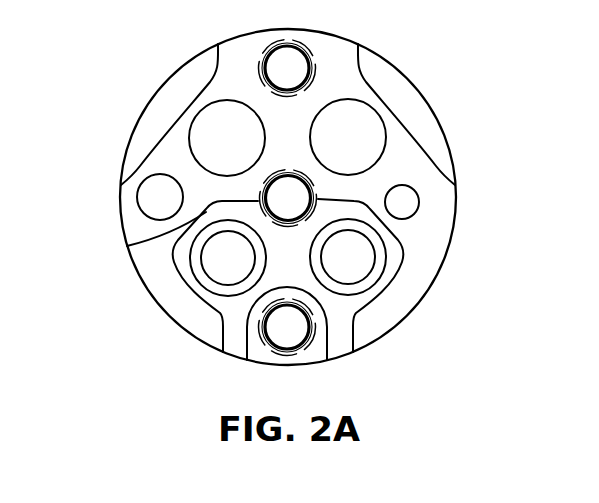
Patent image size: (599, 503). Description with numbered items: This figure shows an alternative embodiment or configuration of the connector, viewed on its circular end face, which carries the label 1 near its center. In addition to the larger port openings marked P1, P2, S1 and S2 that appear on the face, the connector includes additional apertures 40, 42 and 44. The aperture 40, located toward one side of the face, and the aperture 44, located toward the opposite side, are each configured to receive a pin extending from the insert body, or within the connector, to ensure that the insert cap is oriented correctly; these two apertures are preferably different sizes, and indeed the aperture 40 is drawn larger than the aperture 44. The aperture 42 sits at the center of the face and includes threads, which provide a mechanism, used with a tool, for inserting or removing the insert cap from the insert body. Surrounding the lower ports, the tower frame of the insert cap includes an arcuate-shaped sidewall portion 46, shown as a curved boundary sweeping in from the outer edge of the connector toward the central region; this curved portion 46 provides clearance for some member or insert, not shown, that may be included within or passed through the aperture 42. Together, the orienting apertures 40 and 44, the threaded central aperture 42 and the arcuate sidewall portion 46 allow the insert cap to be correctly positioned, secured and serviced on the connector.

The valve body / housing end face 1 is at (288, 197).
The aperture 40 is at (137, 197).
The aperture 42 is at (283, 171).
The aperture 44 is at (419, 202).
The arcuate-shaped sidewall portion 46 is at (127, 246).
The pressure port 1 P1 is at (227, 122).
The pressure port 2 P2 is at (348, 122).
The supply port 1 S1 is at (204, 258).
The supply port 2 S2 is at (372, 257).